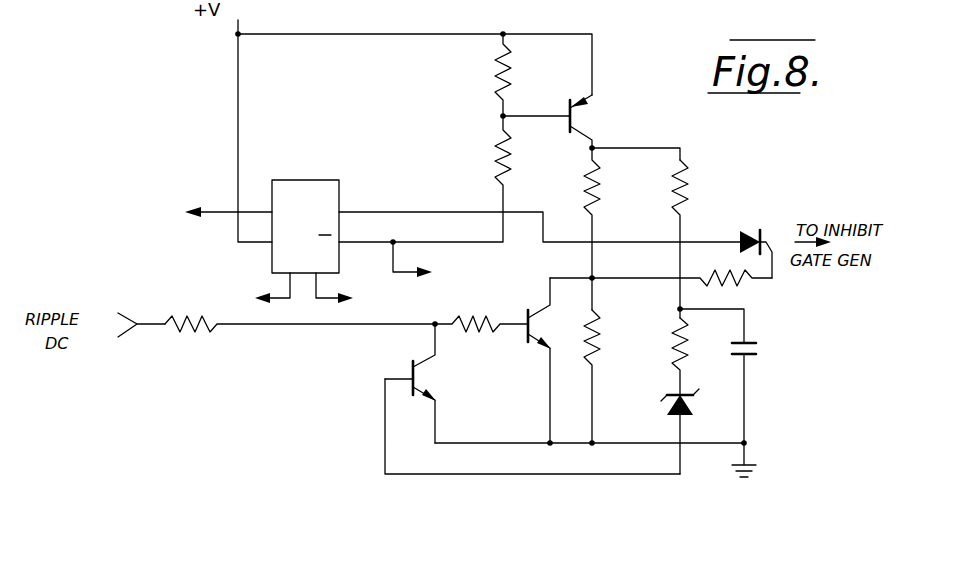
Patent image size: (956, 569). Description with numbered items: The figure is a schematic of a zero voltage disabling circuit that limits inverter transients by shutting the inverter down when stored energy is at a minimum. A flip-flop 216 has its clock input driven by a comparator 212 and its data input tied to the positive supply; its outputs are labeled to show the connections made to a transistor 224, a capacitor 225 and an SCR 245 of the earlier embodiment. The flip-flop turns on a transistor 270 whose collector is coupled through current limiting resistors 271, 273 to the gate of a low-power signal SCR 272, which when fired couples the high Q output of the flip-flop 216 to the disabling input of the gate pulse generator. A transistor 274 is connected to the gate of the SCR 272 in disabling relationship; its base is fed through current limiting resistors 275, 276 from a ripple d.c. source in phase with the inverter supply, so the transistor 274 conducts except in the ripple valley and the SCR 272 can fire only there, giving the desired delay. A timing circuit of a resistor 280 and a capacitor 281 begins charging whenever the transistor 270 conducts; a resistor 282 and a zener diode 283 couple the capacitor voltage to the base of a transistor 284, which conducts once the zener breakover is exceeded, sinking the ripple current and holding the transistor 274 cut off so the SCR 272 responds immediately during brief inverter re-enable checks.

The comparator 212 is at (206, 215).
The flip-flop 216 is at (300, 180).
The transistor 224 is at (434, 263).
The capacitor 225 is at (356, 292).
The SCR 245 is at (250, 292).
The transistor 270 is at (597, 112).
The current limiting resistor 271 is at (600, 193).
The signal SCR 272 is at (746, 230).
The current limiting resistor 273 is at (750, 288).
The transistor 274 is at (526, 330).
The current limiting resistor 275 is at (473, 318).
The current limiting resistor 276 is at (205, 332).
The resistor 280 is at (690, 175).
The capacitor 281 is at (760, 348).
The resistor 282 is at (672, 348).
The zener diode 283 is at (668, 397).
The transistor 284 is at (410, 365).